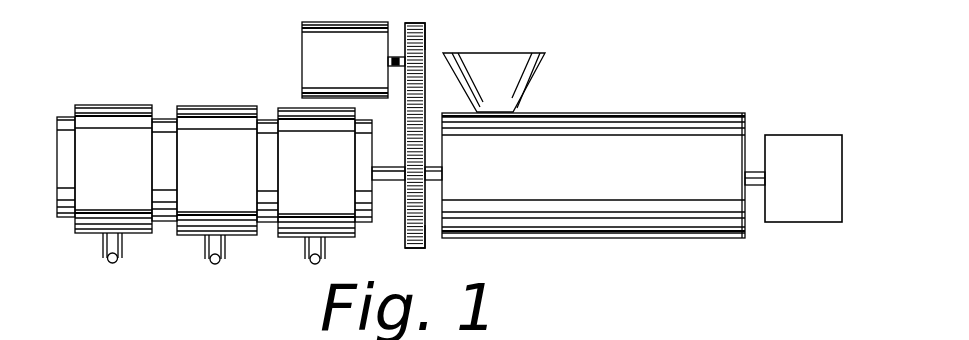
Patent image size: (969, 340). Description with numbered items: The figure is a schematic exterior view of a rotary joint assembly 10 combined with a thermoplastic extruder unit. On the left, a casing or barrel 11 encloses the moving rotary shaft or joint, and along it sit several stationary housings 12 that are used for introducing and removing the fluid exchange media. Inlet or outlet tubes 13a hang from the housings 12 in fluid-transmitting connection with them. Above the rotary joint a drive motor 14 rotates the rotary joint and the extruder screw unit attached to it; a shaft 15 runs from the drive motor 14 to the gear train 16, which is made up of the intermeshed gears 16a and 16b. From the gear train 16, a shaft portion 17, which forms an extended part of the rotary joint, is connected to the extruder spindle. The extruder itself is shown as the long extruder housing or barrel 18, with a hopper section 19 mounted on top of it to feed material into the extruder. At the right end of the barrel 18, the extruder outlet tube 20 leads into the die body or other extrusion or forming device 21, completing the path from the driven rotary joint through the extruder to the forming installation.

The rotary joint assembly 10 is at (157, 76).
The casing 11 is at (68, 208).
The stationary housings 12 is at (100, 115).
The inlet tubes 13a is at (205, 247).
The drive motor 14 is at (313, 50).
The shaft 15 is at (395, 62).
The gear train 16 is at (440, 32).
The gear 16a is at (427, 40).
The gear 16b is at (422, 245).
The shaft portion 17 is at (390, 173).
The extruder housing 18 is at (668, 218).
The hopper section 19 is at (525, 82).
The extruder outlet tube 20 is at (752, 182).
The die body 21 is at (807, 142).